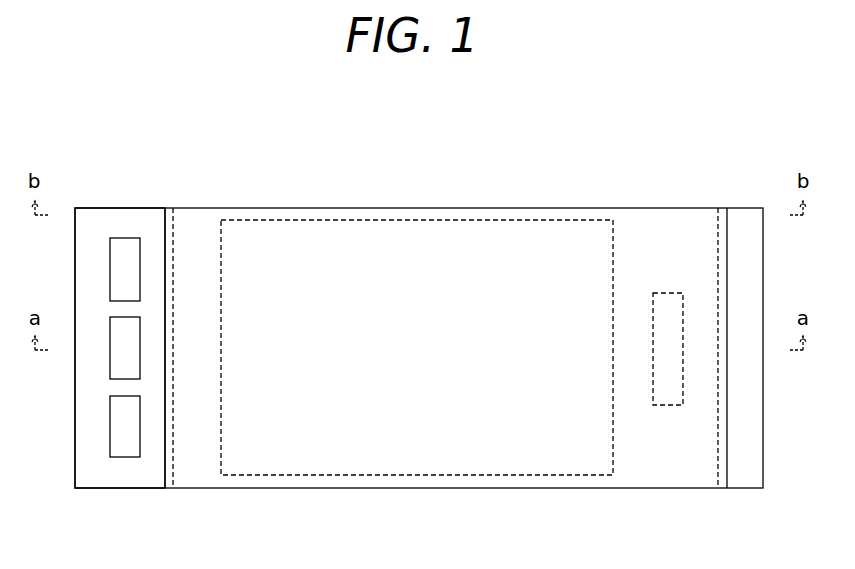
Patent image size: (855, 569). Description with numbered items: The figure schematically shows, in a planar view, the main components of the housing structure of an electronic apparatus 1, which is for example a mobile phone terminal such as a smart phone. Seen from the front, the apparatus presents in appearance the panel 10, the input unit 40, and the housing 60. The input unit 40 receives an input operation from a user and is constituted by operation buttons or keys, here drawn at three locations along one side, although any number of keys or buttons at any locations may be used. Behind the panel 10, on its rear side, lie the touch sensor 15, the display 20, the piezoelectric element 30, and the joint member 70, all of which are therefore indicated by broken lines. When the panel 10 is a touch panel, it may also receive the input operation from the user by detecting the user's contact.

The electronic apparatus 1 is at (395, 308).
The panel 10 is at (240, 210).
The touch sensor 15 is at (417, 305).
The display 20 is at (397, 222).
The piezoelectric element 30 is at (653, 293).
The input unit 40 is at (126, 253).
The housing 60 is at (93, 220).
The joint member 70 is at (168, 235).